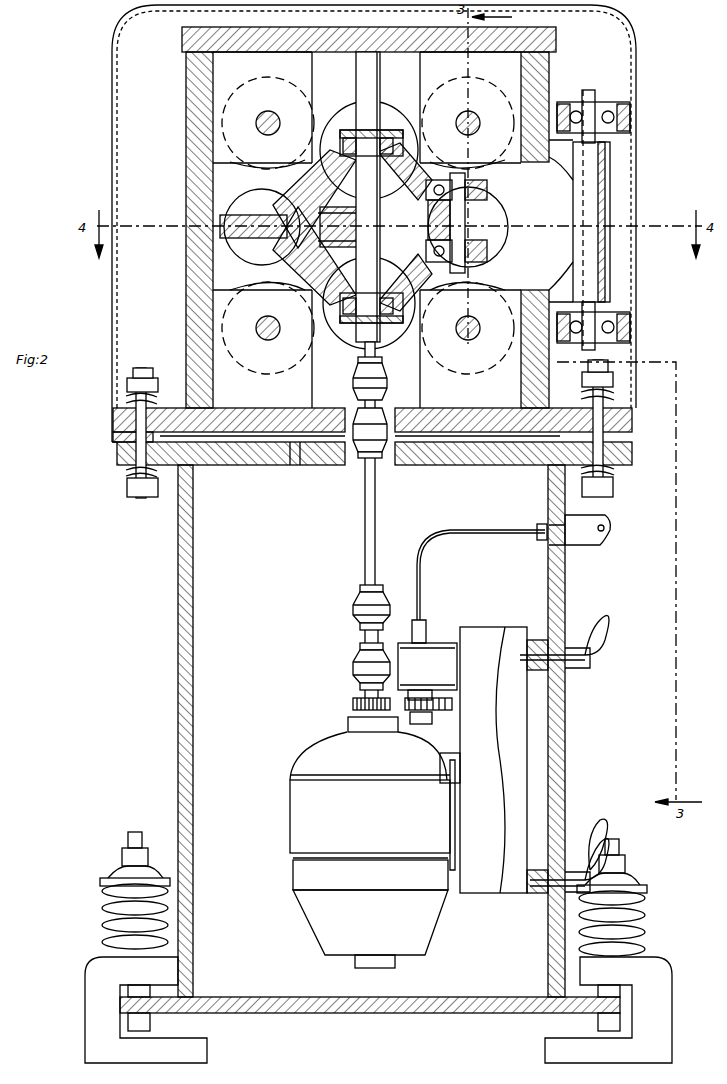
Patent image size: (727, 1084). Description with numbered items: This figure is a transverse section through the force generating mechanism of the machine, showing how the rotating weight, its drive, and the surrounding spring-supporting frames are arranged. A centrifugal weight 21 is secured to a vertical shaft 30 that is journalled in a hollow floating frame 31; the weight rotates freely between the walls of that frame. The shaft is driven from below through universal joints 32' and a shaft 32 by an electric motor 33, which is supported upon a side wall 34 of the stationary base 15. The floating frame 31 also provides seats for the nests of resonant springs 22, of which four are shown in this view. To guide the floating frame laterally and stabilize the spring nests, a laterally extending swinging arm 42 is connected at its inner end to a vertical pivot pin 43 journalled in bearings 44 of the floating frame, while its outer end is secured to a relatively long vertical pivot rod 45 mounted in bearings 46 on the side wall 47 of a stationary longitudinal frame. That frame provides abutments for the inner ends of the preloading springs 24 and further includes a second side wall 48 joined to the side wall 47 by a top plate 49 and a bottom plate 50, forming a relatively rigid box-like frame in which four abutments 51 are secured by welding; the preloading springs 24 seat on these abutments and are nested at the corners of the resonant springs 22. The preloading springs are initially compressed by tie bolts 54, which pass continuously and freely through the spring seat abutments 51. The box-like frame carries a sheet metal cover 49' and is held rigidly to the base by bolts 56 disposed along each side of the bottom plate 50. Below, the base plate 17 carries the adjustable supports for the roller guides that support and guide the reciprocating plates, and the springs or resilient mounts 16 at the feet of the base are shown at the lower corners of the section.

The stationary base 15 is at (592, 779).
The spring mounts 16 is at (105, 905).
The base plate 17 is at (612, 462).
The centrifugal weight 21 is at (342, 208).
The resonant springs 22 is at (368, 103).
The preloading springs 24 is at (425, 108).
The vertical shaft 30 is at (380, 255).
The floating frame 31 is at (402, 190).
The shaft 32 is at (346, 466).
The universal joints 32' is at (350, 527).
The electric motor 33 is at (312, 770).
The side wall 34 is at (560, 745).
The swinging arm 42 is at (572, 217).
The vertical pivot pin 43 is at (472, 212).
The bearings 44 is at (480, 188).
The vertical pivot rod 45 is at (590, 96).
The bearings 46 is at (622, 118).
The side wall 47 is at (540, 78).
The second side wall 48 is at (186, 104).
The top plate 49 is at (345, 39).
The sheet metal cover 49' is at (347, 206).
The bottom plate 50 is at (266, 392).
The abutments 51 is at (307, 70).
The tie bolts 54 is at (268, 112).
The bolts 56 is at (146, 366).